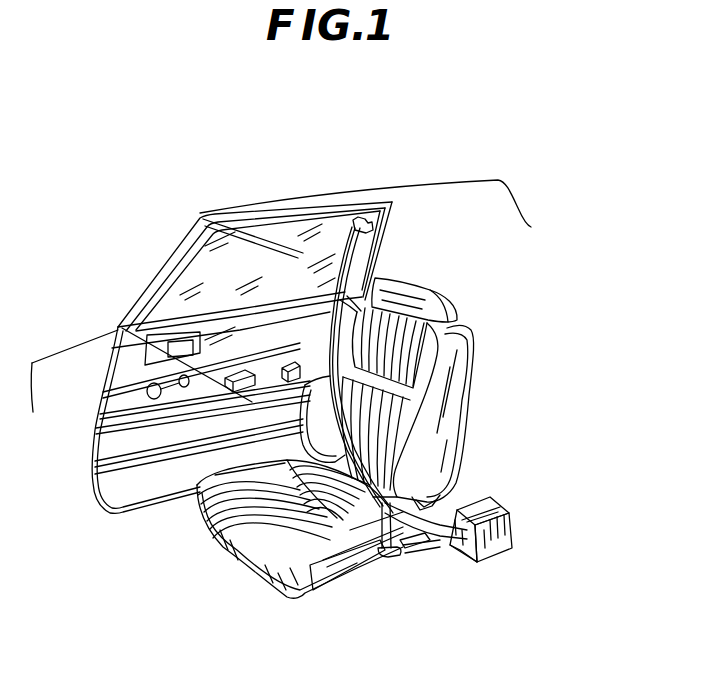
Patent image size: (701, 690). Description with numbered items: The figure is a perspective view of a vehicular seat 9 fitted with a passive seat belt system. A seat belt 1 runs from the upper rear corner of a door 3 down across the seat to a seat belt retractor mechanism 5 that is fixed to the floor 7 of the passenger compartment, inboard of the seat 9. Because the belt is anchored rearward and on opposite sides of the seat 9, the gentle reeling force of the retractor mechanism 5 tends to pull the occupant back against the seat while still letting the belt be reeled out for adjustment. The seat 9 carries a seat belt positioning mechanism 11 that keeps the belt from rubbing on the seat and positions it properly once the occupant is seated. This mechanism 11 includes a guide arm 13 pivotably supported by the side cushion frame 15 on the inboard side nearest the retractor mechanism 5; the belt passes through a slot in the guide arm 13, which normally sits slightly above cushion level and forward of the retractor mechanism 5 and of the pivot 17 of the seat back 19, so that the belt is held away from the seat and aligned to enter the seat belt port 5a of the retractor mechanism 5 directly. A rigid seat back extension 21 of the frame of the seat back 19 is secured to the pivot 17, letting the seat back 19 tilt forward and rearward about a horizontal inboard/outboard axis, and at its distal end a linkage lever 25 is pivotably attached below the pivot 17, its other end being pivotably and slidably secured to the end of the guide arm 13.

The seat belt 1 is at (363, 287).
The door 3 is at (250, 400).
The seat belt retractor mechanism 5 is at (500, 494).
The seat belt port 5a is at (467, 557).
The floor 7 is at (432, 555).
The seat 9 is at (215, 537).
The seat belt positioning mechanism 11 is at (398, 563).
The guide arm 13 is at (350, 550).
The side cushion frame 15 is at (357, 568).
The pivot 17 is at (423, 513).
The seat back 19 is at (450, 373).
The seat back extension 21 is at (423, 507).
The linkage lever 25 is at (420, 542).